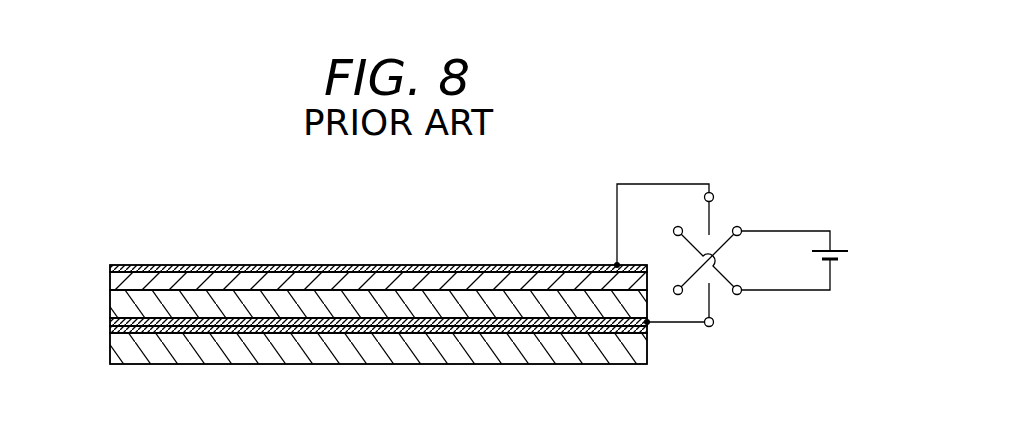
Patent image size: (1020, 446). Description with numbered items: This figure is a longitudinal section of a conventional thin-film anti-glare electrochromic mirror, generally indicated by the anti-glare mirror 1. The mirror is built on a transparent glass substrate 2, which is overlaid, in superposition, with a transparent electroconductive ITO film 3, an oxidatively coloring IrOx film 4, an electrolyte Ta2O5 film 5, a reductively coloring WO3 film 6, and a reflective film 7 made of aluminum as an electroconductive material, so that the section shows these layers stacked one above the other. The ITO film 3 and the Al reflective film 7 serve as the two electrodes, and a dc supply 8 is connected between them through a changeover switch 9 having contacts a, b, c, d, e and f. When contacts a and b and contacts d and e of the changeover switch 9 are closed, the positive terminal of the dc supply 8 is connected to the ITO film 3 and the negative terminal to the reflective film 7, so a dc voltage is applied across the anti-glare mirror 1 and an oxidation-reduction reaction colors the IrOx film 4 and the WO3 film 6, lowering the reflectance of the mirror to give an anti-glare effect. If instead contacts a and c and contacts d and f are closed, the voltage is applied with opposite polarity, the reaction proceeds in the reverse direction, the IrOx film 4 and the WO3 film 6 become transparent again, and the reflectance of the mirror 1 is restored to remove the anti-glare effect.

The anti-glare mirror 1 is at (182, 238).
The transparent glass substrate 2 is at (110, 350).
The transparent electroconductive ITO film 3 is at (110, 328).
The oxidatively coloring IrOx film 4 is at (110, 321).
The electrolyte Ta2O5 film 5 is at (110, 304).
The reductively coloring WO3 film 6 is at (110, 280).
The reflective film 7 is at (110, 268).
The dc supply 8 is at (843, 250).
The changeover switch 9 is at (722, 207).